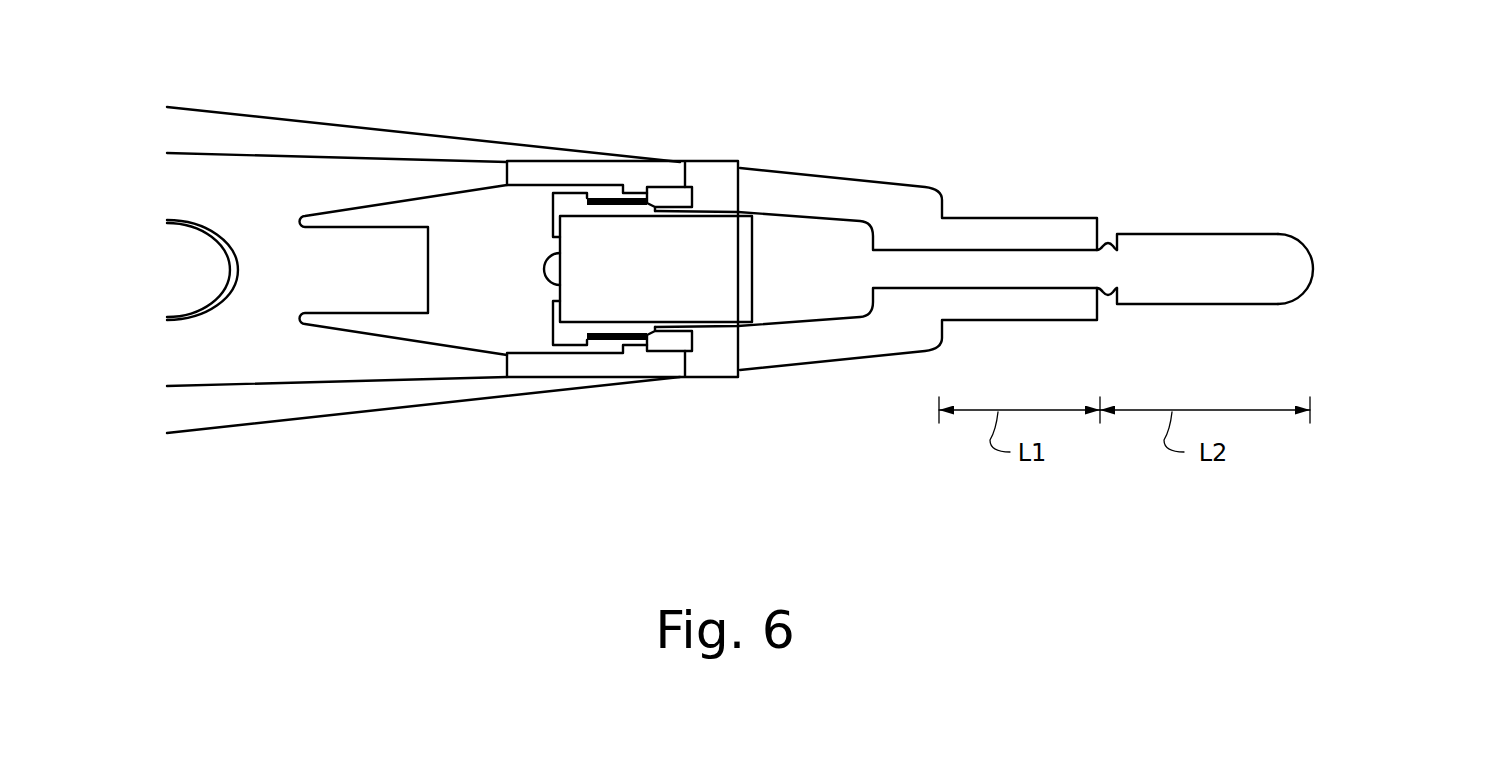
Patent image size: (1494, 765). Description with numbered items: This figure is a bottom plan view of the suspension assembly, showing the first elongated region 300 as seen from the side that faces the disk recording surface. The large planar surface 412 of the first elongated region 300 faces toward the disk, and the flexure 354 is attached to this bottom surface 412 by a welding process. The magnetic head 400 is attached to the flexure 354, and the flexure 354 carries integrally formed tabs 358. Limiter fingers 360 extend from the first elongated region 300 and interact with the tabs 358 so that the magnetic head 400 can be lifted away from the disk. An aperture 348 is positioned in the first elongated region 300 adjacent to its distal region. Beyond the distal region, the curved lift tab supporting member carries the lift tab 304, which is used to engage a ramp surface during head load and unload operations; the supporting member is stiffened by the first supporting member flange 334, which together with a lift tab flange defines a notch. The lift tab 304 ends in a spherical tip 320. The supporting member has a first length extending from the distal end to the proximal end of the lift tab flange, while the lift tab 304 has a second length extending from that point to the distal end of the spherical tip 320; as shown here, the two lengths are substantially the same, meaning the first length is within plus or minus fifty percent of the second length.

The first elongated region 300 is at (340, 127).
The lift tab 304 is at (1218, 243).
The spherical tip 320 is at (1315, 271).
The first supporting member flange 334 is at (1042, 227).
The aperture 348 is at (886, 269).
The flexure 354 is at (215, 388).
The tabs 358 is at (658, 352).
The limiter fingers 360 is at (636, 345).
The magnetic head 400 is at (656, 269).
The planar surface 412 is at (337, 269).